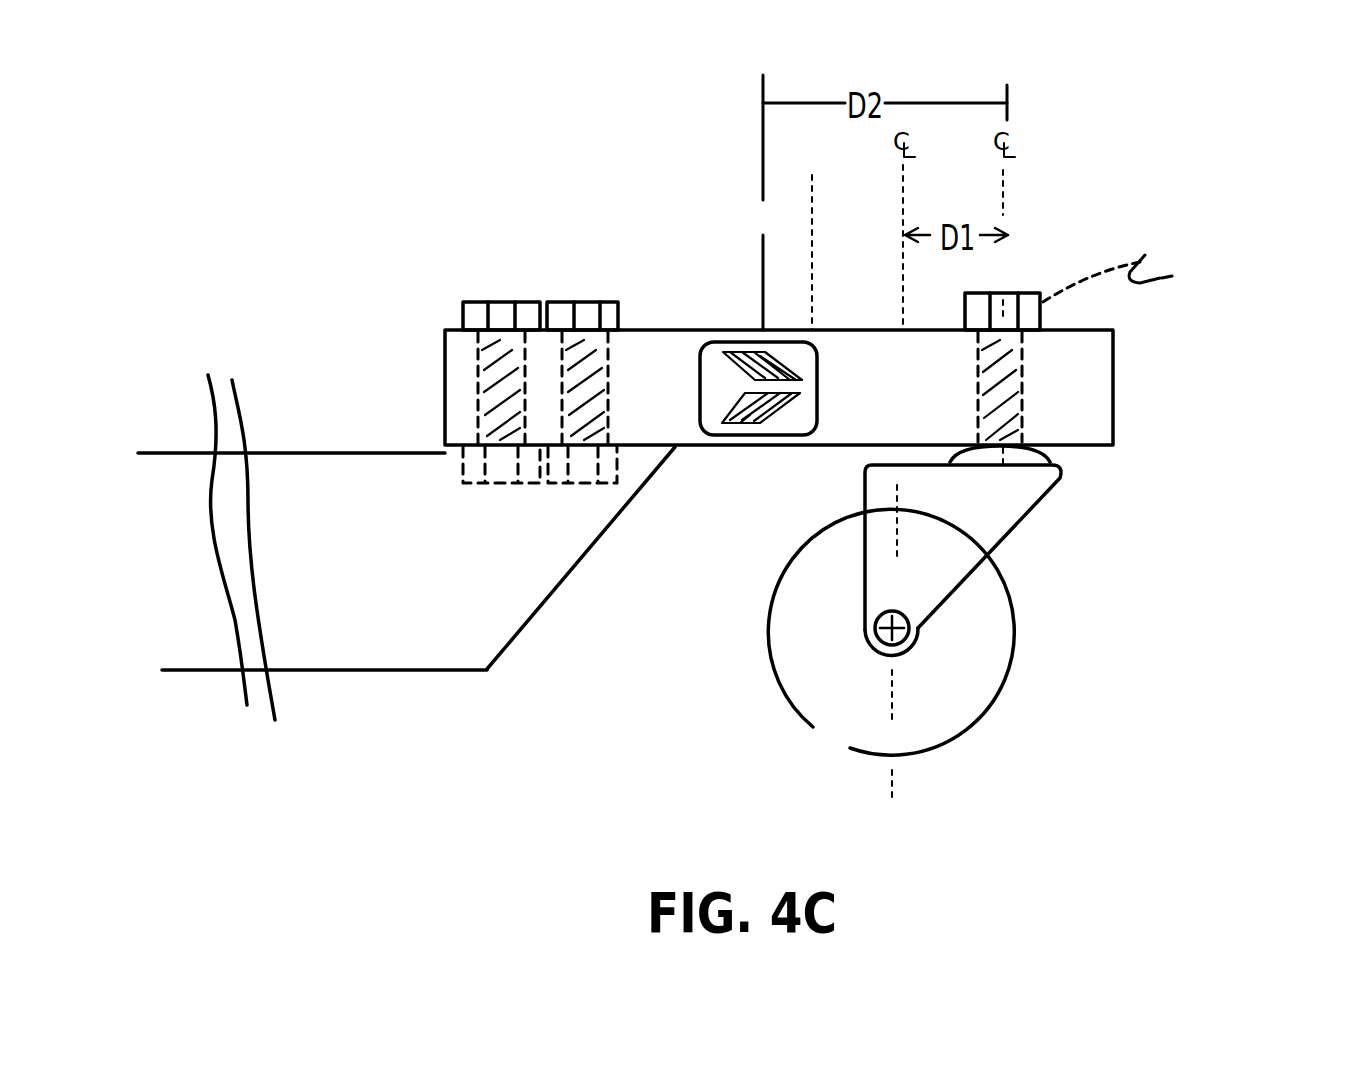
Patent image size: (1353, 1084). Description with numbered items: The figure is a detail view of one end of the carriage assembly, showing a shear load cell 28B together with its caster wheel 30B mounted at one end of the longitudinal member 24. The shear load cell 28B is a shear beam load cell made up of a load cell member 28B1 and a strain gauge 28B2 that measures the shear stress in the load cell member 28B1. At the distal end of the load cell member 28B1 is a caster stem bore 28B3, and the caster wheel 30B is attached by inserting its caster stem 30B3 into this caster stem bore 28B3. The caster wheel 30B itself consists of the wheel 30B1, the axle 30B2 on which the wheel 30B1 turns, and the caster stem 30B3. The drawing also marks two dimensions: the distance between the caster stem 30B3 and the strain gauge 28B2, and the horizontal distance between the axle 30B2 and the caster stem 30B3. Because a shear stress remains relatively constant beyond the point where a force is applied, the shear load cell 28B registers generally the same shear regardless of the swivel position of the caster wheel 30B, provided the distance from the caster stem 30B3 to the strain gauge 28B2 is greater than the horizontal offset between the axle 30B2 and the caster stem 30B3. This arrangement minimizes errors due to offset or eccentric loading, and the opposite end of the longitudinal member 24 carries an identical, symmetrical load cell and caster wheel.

The longitudinal member 24 is at (405, 588).
The shear load cell 28B is at (727, 292).
The load cell member 28B1 is at (810, 388).
The strain gauge 28B2 is at (722, 425).
The caster stem bore 28B3 is at (1022, 375).
The caster wheel 30B is at (968, 632).
The wheel 30B1 is at (957, 710).
The axle 30B2 is at (912, 620).
The caster stem 30B3 is at (1018, 408).